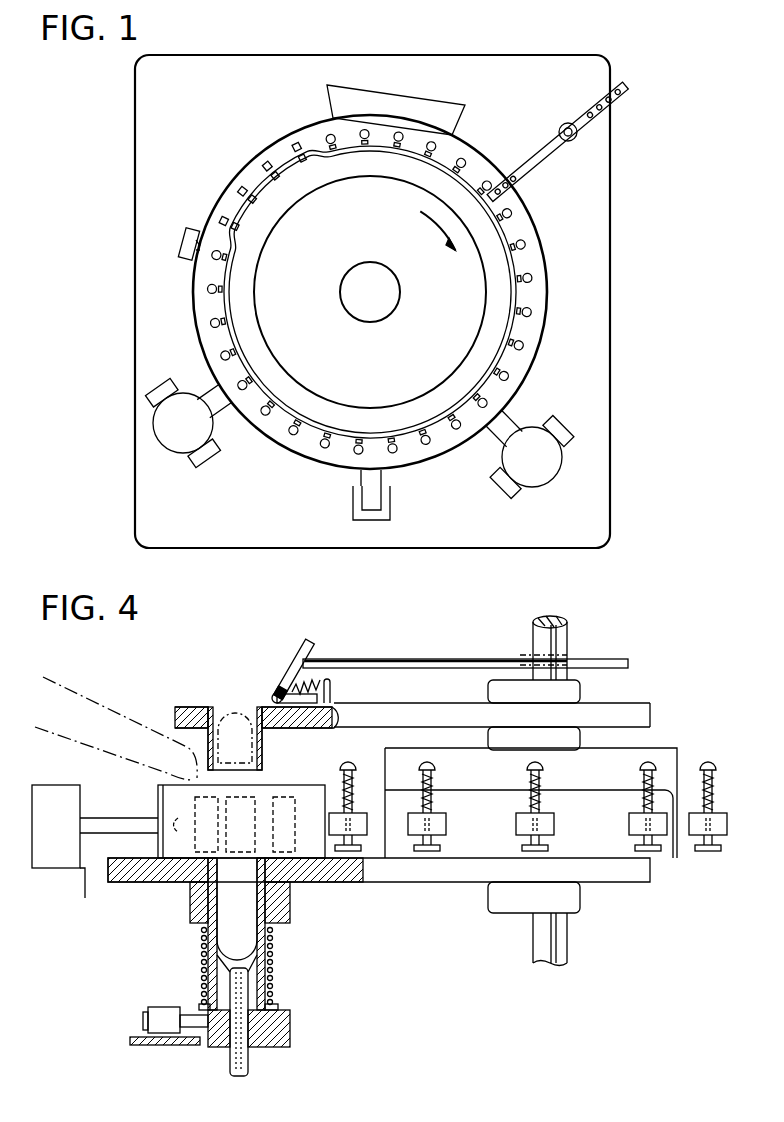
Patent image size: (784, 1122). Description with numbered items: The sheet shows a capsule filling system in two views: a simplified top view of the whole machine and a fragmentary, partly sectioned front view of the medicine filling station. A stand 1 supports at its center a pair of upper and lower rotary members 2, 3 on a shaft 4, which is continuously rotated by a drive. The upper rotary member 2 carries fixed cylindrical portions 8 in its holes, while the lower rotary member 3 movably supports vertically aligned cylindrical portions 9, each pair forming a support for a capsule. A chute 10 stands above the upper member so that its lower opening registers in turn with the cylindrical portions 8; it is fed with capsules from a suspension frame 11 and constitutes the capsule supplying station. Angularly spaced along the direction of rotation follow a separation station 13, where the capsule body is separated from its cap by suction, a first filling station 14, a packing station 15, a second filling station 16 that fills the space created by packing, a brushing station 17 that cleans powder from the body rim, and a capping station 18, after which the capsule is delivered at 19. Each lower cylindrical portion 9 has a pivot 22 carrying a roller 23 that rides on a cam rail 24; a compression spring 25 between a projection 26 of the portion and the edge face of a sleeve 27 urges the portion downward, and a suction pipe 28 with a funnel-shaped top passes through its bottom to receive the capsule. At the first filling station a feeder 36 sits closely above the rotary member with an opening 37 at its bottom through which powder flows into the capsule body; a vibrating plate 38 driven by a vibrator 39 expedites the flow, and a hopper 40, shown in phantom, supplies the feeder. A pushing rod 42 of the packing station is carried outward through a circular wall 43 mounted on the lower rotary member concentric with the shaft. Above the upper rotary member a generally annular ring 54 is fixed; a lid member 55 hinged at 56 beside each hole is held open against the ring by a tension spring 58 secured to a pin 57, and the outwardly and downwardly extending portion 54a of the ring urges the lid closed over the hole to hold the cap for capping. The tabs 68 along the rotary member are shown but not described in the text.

In FIG. 1, the stand 1 is at (214, 60).
In FIG. 1, the upper rotary member 2 is at (540, 232).
In FIG. 4, the upper rotary member 2 is at (450, 722).
In FIG. 4, the lower rotary member 3 is at (414, 876).
In FIG. 1, the shaft 4 is at (384, 269).
In FIG. 4, the shaft 4 is at (567, 630).
In FIG. 4, the cylindrical portion 8 is at (262, 740).
In FIG. 4, the cylindrical portion 9 is at (264, 1044).
In FIG. 1, the chute 10 is at (522, 183).
In FIG. 1, the suspension frame 11 is at (584, 116).
In FIG. 1, the separation station 13 is at (549, 302).
In FIG. 1, the first filling station 14 is at (512, 414).
In FIG. 1, the packing station 15 is at (392, 488).
In FIG. 1, the second filling station 16 is at (222, 408).
In FIG. 1, the brushing station 17 is at (200, 216).
In FIG. 1, the capping station 18 is at (260, 146).
In FIG. 1, the delivery 19 is at (414, 96).
In FIG. 4, the pivot 22 is at (190, 1010).
In FIG. 4, the roller 23 is at (156, 1008).
In FIG. 4, the cam rail 24 is at (132, 1042).
In FIG. 4, the compression spring 25 is at (276, 940).
In FIG. 4, the projection 26 is at (272, 1008).
In FIG. 4, the sleeve 27 is at (286, 894).
In FIG. 4, the suction pipe 28 is at (230, 1068).
In FIG. 4, the feeder 36 is at (160, 790).
In FIG. 4, the opening 37 is at (237, 857).
In FIG. 4, the vibrating plate 38 is at (176, 870).
In FIG. 4, the vibrator 39 is at (50, 800).
In FIG. 4, the hopper 40 is at (66, 682).
In FIG. 4, the pushing rod 42 is at (432, 784).
In FIG. 4, the circular wall 43 is at (668, 766).
In FIG. 1, the annular ring 54 is at (412, 404).
In FIG. 4, the annular ring 54 is at (426, 660).
In FIG. 1, the outwardly and downwardly extending portion 54a is at (268, 176).
In FIG. 1, the lid member 55 is at (210, 298).
In FIG. 4, the lid member 55 is at (304, 640).
In FIG. 4, the hinge 56 is at (271, 698).
In FIG. 4, the pin 57 is at (332, 698).
In FIG. 4, the tension spring 58 is at (316, 680).
In FIG. 1, the tab 6,8 68 is at (212, 326).